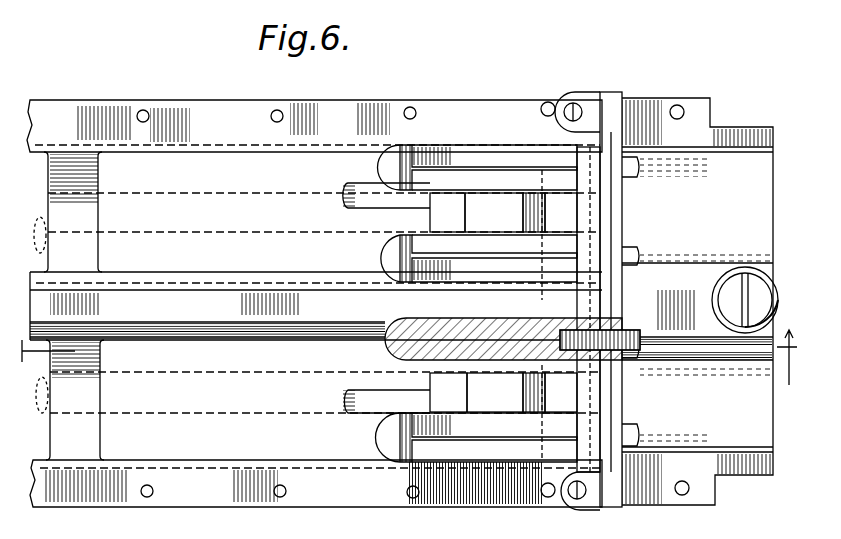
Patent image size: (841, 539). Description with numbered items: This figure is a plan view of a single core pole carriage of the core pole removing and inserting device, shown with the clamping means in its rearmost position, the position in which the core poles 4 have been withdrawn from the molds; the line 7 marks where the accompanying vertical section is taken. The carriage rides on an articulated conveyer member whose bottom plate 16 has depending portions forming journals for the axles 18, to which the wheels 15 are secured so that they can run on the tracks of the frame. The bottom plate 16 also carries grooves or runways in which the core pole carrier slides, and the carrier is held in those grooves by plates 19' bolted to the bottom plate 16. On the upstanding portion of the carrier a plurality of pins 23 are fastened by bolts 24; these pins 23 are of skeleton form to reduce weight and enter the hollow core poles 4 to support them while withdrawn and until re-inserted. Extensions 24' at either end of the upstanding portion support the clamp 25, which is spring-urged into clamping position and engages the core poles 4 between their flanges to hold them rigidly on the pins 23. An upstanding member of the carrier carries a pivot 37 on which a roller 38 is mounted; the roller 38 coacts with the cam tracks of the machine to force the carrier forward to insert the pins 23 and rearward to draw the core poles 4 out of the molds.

The plate 19' is at (314, 300).
The core pole 4 is at (297, 235).
The bottom plate 16 is at (247, 328).
The bolt 24 is at (612, 299).
The extension 24' is at (598, 298).
The pivot 37 is at (726, 297).
The roller 38 is at (748, 334).
The pin 23 is at (455, 136).
The axle 18 is at (365, 202).
The wheel 15 is at (553, 212).
The clamp 25 is at (545, 104).
The section line 7— 7 is at (408, 363).